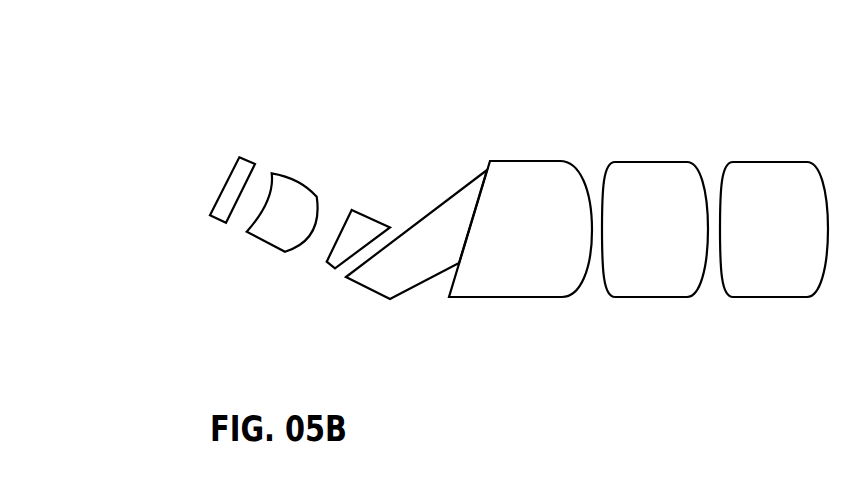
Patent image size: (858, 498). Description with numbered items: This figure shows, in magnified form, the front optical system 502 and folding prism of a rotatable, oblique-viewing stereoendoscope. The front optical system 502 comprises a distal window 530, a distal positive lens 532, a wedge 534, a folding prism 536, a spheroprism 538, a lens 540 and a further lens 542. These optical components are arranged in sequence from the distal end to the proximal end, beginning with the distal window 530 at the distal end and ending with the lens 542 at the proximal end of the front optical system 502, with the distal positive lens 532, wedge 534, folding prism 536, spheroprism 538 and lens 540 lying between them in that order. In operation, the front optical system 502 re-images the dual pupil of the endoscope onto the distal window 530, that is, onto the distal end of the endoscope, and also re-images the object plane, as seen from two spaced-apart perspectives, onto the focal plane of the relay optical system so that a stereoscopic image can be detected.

The front optical system 502 is at (597, 94).
The distal window 530 is at (223, 221).
The distal positive lens 532 is at (260, 247).
The wedge 534 is at (328, 270).
The folding prism 536 is at (410, 293).
The spheroprism 538 is at (510, 300).
The lens 540 is at (643, 298).
The lens 542 is at (757, 298).